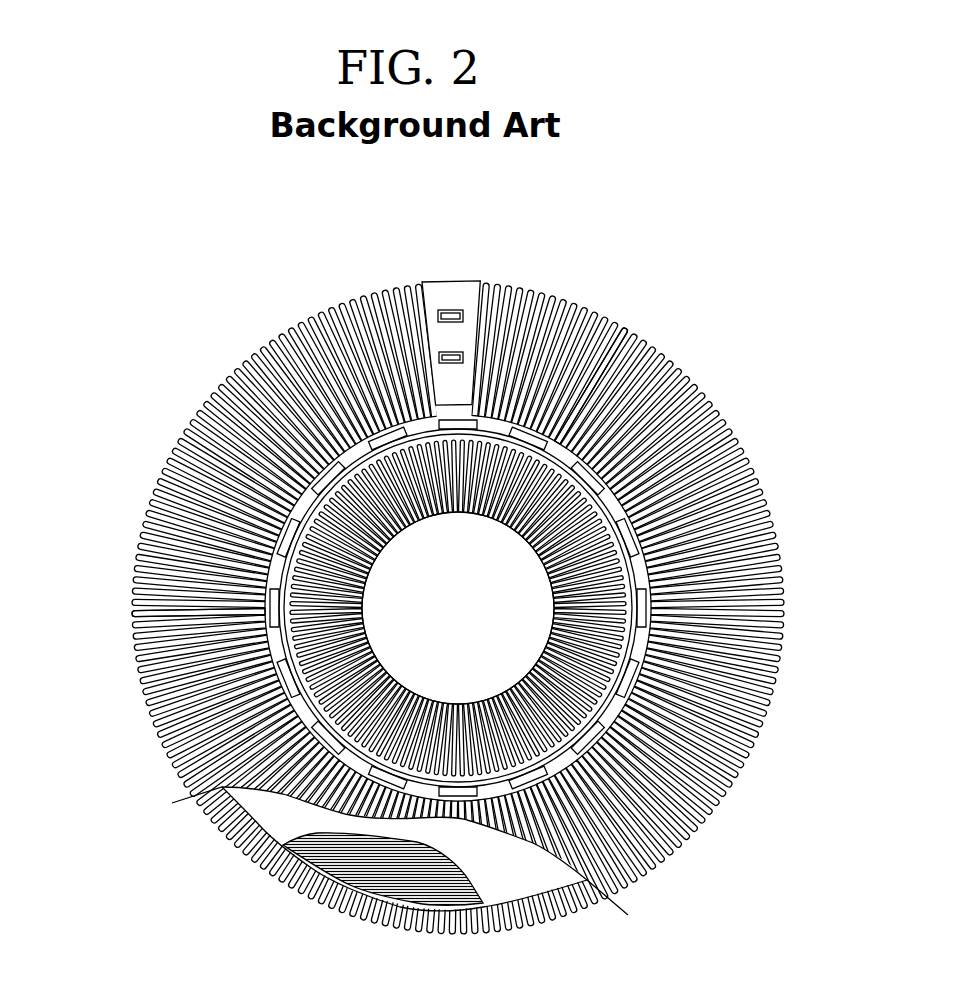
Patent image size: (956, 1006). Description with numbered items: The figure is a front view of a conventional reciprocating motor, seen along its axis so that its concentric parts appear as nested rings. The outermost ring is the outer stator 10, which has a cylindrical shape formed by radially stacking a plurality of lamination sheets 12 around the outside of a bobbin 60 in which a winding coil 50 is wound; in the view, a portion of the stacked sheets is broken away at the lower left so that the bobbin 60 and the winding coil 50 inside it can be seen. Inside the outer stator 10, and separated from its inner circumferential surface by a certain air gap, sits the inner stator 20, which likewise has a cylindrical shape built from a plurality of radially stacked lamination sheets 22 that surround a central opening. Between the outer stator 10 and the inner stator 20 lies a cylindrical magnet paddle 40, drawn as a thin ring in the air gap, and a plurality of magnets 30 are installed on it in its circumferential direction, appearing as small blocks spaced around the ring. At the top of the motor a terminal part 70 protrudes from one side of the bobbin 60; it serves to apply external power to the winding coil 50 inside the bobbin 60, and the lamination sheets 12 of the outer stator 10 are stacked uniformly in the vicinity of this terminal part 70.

The outer stator 10 is at (190, 405).
The lamination sheet 12 is at (626, 323).
The inner stator 20 is at (290, 572).
The lamination sheet 22 is at (130, 598).
The magnet 30 is at (635, 531).
The magnet paddle 40 is at (612, 480).
The winding coil 50 is at (313, 867).
The bobbin 60 is at (266, 815).
The terminal part 70 is at (433, 298).